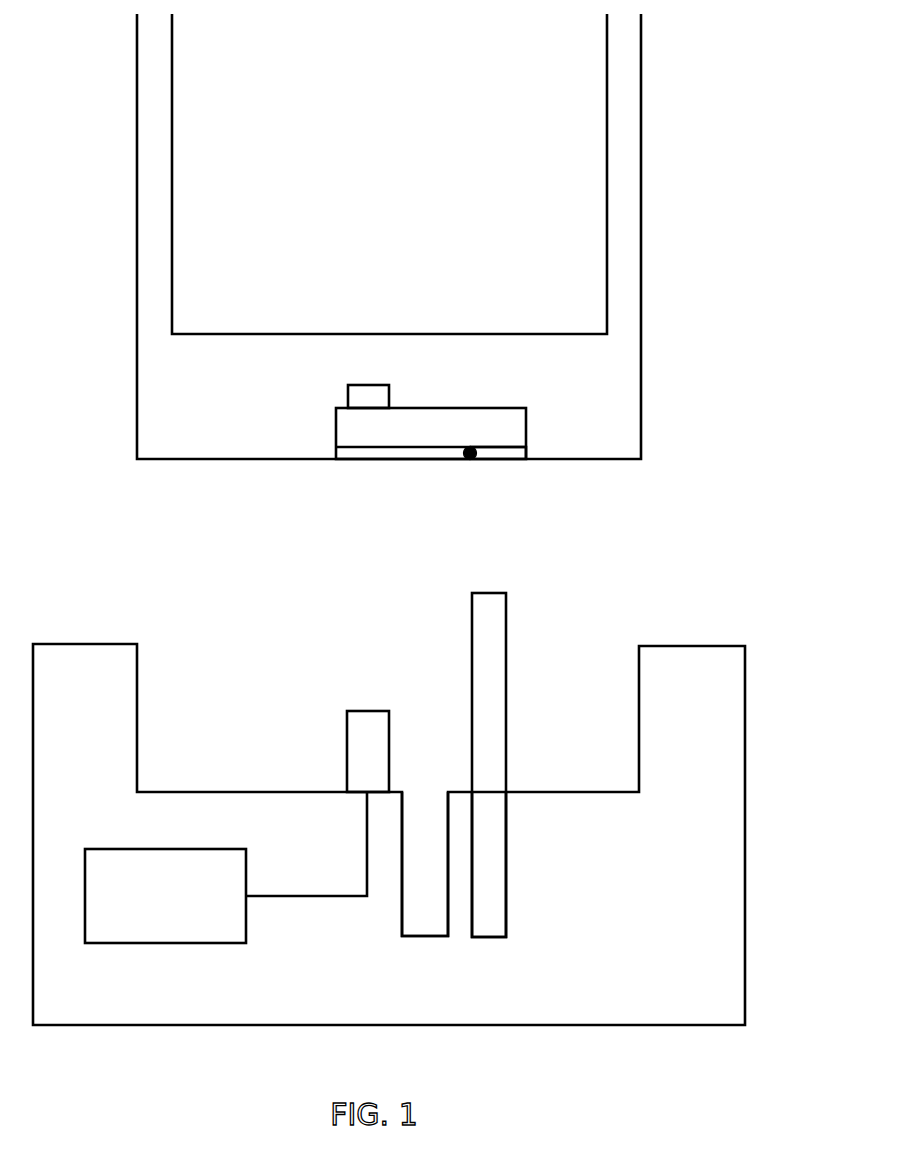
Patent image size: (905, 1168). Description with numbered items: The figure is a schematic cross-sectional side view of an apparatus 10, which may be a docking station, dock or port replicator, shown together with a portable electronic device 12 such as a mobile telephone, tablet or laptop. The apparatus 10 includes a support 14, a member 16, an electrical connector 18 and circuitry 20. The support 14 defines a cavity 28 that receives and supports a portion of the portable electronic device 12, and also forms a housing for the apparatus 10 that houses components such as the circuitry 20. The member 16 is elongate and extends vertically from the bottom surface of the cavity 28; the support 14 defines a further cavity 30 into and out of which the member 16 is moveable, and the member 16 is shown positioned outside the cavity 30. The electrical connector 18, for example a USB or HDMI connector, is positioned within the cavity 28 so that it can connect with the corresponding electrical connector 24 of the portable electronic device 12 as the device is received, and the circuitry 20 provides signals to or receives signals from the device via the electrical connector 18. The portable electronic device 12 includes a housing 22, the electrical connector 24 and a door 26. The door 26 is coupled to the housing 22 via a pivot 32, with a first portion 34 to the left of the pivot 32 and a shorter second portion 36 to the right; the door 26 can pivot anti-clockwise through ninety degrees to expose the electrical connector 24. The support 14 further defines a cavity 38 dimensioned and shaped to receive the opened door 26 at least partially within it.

The apparatus 10 is at (740, 586).
The portable electronic device 12 is at (697, 170).
The support 14 is at (724, 985).
The member 16 is at (498, 622).
The electrical connector 18 is at (356, 747).
The circuitry 20 is at (168, 944).
The housing 22 is at (630, 67).
The electrical connector 24 is at (378, 393).
The door 26 is at (346, 460).
The cavity 28 is at (207, 713).
The cavity 30 is at (493, 872).
The pivot 32 is at (462, 460).
The first portion 34 is at (397, 458).
The second portion 36 is at (508, 455).
The cavity 38 is at (422, 930).